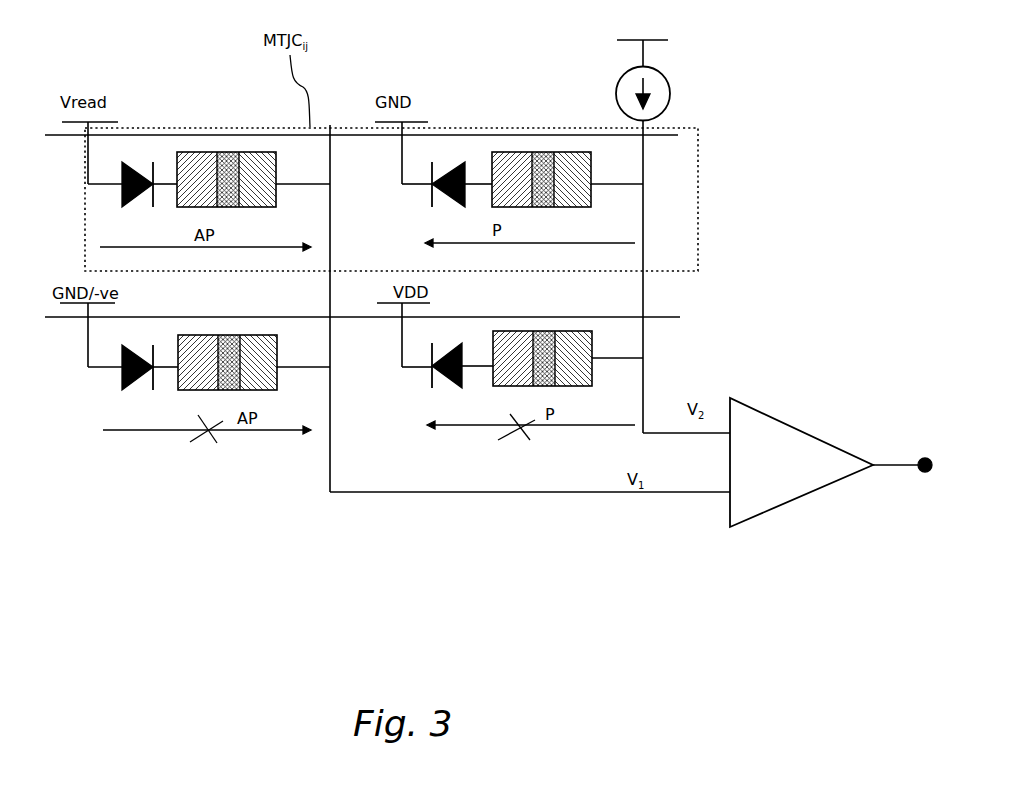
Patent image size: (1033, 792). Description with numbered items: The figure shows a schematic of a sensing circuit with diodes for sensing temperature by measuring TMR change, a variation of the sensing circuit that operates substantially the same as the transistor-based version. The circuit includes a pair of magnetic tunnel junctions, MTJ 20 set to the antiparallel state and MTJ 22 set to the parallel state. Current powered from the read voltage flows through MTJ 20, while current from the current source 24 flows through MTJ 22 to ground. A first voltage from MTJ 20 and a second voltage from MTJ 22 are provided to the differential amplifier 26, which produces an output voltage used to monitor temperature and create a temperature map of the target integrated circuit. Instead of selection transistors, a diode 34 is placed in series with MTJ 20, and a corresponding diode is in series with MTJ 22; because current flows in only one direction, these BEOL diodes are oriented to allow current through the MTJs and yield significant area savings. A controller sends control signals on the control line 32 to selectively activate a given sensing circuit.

The MTJ 20 is at (227, 152).
The MTJ 22 is at (530, 152).
The current source 24 is at (623, 72).
The differential amplifier 26 is at (785, 488).
The control line 32 is at (128, 162).
The diode 34 is at (457, 160).